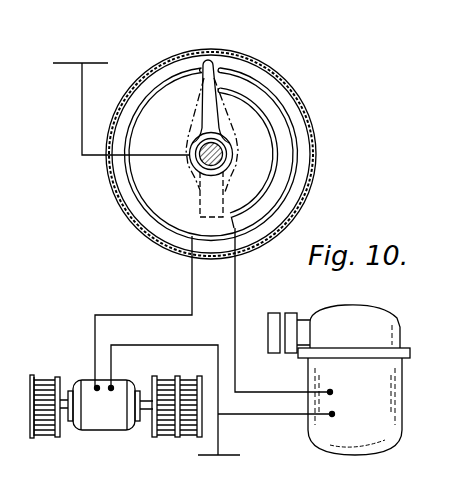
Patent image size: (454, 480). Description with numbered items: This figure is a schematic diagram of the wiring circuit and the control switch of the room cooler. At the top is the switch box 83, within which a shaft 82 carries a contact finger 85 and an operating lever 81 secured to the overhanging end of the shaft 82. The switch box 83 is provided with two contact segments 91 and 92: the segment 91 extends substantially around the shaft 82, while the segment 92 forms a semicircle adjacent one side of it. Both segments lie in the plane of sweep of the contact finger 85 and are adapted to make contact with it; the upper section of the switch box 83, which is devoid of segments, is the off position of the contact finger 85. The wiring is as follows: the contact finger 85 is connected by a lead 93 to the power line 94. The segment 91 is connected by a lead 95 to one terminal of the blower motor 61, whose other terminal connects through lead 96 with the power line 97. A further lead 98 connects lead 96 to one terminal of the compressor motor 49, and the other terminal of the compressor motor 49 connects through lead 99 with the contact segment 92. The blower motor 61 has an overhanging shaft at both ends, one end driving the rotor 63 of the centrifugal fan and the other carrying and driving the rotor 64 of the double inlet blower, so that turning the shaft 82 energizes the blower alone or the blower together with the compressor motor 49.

The motor 49 is at (388, 385).
The motor 61 is at (103, 432).
The rotor 63 is at (45, 440).
The rotor 64 is at (168, 440).
The operating lever 81 is at (226, 192).
The shaft 82 is at (203, 163).
The switch box 83 is at (306, 110).
The contact finger 85 is at (214, 62).
The contact segment 91 is at (271, 87).
The contact segment 92 is at (271, 136).
The lead 93 is at (82, 108).
The power line 94 is at (64, 62).
The lead 95 is at (142, 315).
The lead 96 is at (218, 360).
The power line 97 is at (232, 455).
The lead 98 is at (287, 414).
The lead 99 is at (240, 288).